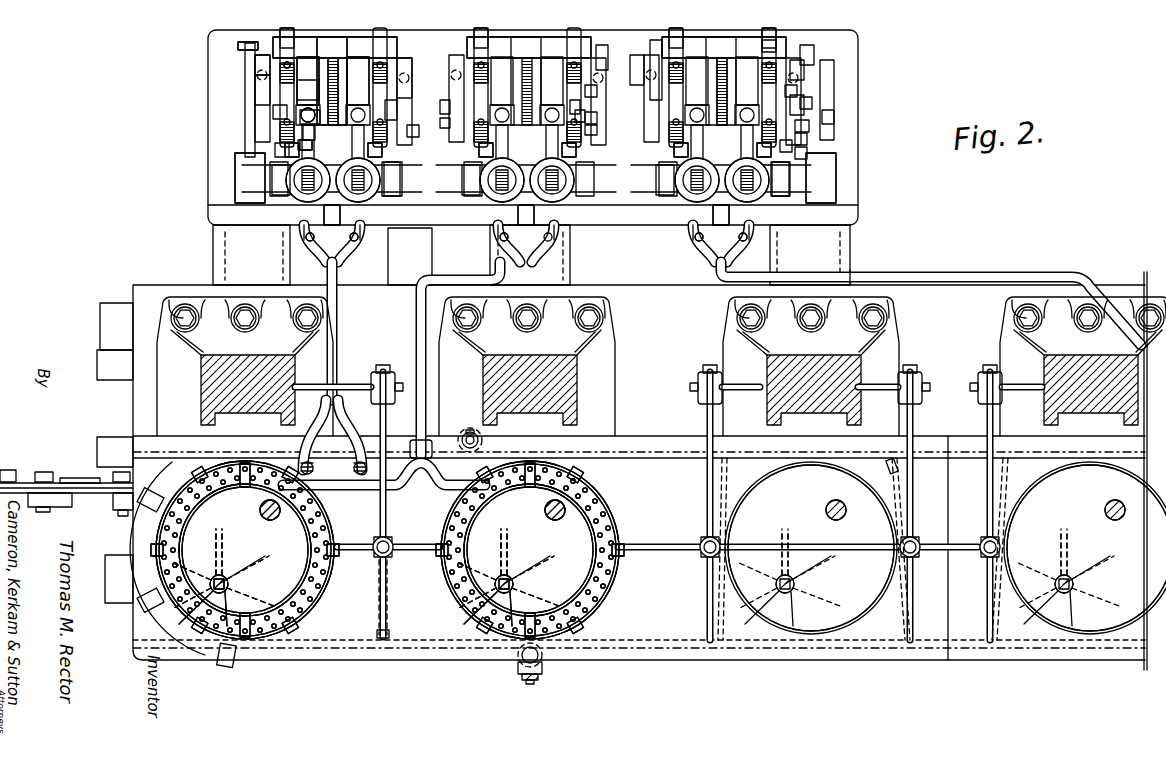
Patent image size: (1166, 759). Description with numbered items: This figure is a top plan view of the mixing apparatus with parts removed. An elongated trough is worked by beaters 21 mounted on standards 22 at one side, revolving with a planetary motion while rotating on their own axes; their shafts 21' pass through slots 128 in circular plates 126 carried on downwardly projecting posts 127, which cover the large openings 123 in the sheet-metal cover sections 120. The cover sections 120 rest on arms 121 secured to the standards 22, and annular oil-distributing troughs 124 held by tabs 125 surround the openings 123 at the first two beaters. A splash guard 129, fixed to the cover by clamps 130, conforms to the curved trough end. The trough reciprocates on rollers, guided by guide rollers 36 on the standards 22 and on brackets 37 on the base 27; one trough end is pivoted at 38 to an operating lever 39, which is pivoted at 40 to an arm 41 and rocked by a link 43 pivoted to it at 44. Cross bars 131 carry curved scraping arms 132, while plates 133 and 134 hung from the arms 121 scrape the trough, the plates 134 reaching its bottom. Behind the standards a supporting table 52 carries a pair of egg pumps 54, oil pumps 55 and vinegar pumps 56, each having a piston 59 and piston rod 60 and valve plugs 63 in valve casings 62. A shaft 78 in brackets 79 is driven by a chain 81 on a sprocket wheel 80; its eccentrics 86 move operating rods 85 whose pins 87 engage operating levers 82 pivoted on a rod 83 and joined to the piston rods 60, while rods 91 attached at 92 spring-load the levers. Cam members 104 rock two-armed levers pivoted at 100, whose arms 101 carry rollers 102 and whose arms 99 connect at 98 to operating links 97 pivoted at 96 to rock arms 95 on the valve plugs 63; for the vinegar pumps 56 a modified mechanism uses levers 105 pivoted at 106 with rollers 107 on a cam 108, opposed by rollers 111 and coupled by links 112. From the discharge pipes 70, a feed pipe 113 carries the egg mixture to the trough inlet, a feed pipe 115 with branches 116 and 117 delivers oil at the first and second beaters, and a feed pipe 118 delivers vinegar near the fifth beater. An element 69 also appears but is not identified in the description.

The beaters 21 is at (655, 556).
The beater shafts 21' is at (668, 566).
The standards 22 is at (661, 366).
The base 27 is at (851, 272).
The guide rollers 36 is at (540, 655).
The brackets 37 is at (542, 670).
The pivot 38 is at (122, 510).
The operating lever 39 is at (64, 482).
The pivot 40 is at (9, 457).
The arm 41 is at (85, 480).
The link 43 is at (66, 498).
The pivot 44 is at (40, 471).
The supporting table 52 is at (222, 208).
The egg pumps 54 is at (372, 192).
The oil pumps 55 is at (472, 196).
The vinegar pumps 56 is at (300, 232).
The piston 59 is at (526, 213).
The piston rod 60 is at (362, 195).
The valve casings 62 is at (762, 200).
The valve plugs 63 is at (812, 190).
The pivot pin 69 is at (306, 238).
The discharge pipes 70 is at (736, 243).
The shaft 78 is at (300, 116).
The brackets 79 is at (386, 118).
The sprocket wheel 80 is at (528, 100).
The chain 81 is at (529, 47).
The operating levers 82 is at (772, 158).
The rod 83 is at (298, 148).
The operating rods 85 is at (814, 104).
The eccentrics 86 is at (800, 82).
The pin 87 is at (730, 40).
The rod 91 is at (290, 150).
The connection 92 is at (332, 97).
The rock arm 95 is at (795, 173).
The pivot 96 is at (274, 167).
The operating link 97 is at (807, 151).
The pivot 98 is at (807, 138).
The arm 99 is at (272, 108).
The pivot 100 is at (238, 46).
The arm 101 is at (592, 111).
The roller 102 is at (258, 73).
The cam member 104 is at (262, 84).
The levers 105 is at (660, 45).
The pivot 106 is at (814, 58).
The roller 107 is at (804, 93).
The cam 108 is at (804, 71).
The roller 111 is at (436, 487).
The links 112 is at (809, 127).
The feed pipe 113 is at (342, 325).
The feed pipe 115 is at (414, 345).
The branch 116 is at (334, 490).
The branch 117 is at (310, 462).
The feed pipe 118 is at (920, 277).
The cover sections 120 is at (1116, 660).
The arms 121 is at (1030, 612).
The openings 123 is at (618, 565).
The annular troughs 124 is at (595, 598).
The circular plates 126 is at (1031, 548).
The tabs 125 is at (585, 475).
The posts 127 is at (1110, 518).
The slots 128 is at (512, 588).
The splash guard 129 is at (167, 558).
The clamps 130 is at (230, 660).
The cross bar 131 is at (390, 600).
The scraping arms 132 is at (390, 630).
The plates 133 is at (724, 475).
The plates 134 is at (878, 466).